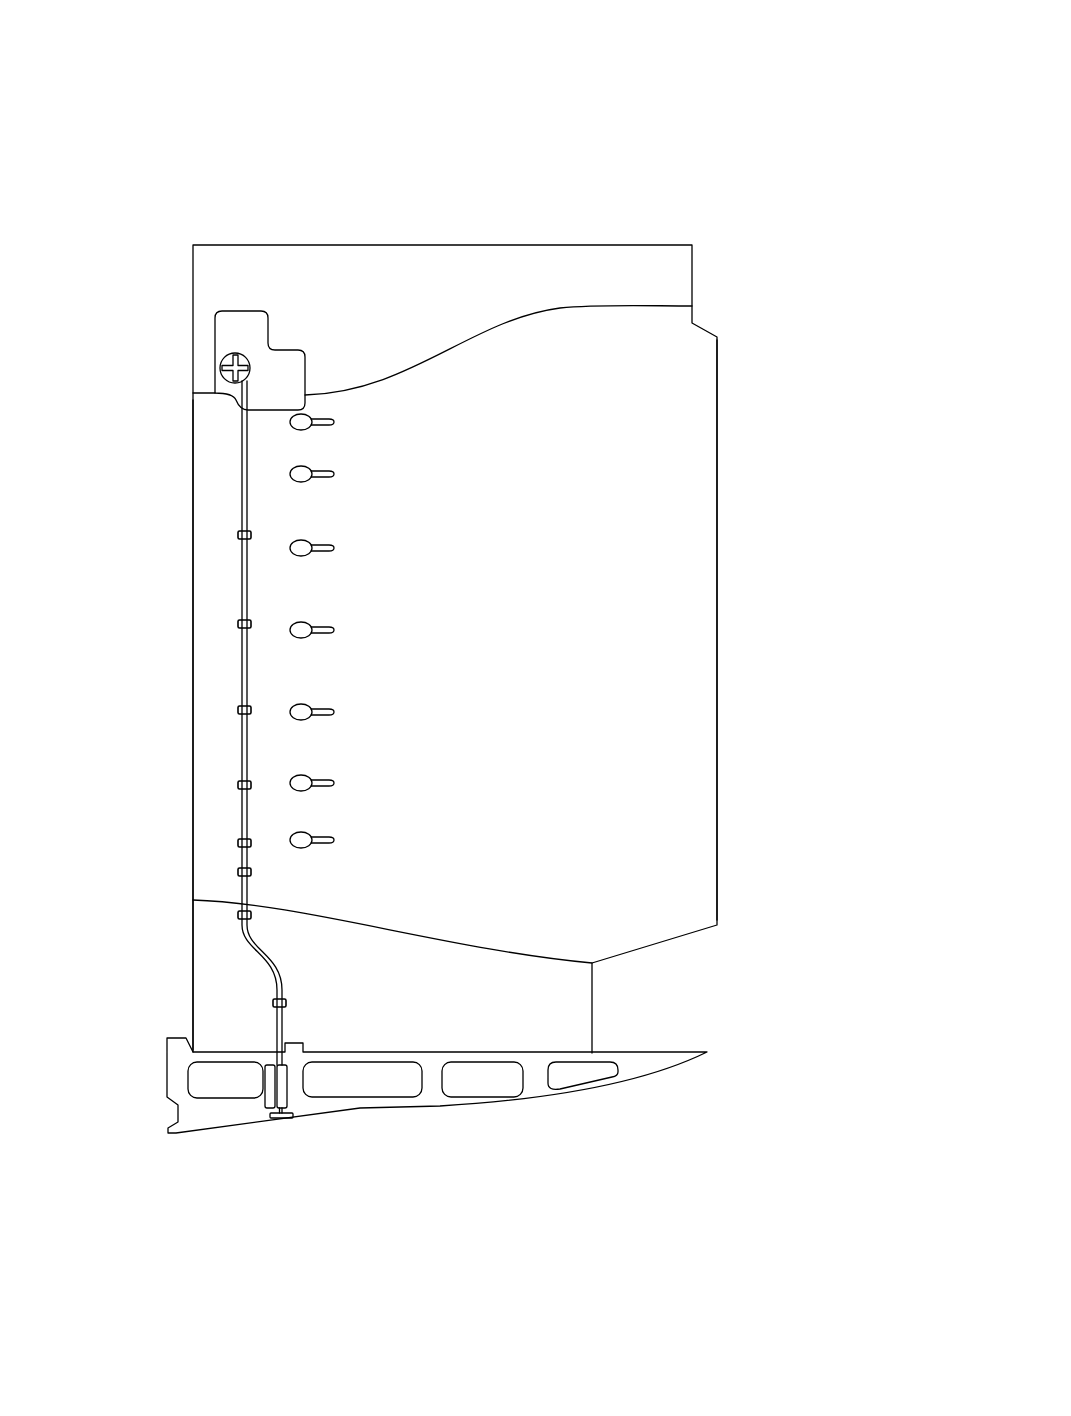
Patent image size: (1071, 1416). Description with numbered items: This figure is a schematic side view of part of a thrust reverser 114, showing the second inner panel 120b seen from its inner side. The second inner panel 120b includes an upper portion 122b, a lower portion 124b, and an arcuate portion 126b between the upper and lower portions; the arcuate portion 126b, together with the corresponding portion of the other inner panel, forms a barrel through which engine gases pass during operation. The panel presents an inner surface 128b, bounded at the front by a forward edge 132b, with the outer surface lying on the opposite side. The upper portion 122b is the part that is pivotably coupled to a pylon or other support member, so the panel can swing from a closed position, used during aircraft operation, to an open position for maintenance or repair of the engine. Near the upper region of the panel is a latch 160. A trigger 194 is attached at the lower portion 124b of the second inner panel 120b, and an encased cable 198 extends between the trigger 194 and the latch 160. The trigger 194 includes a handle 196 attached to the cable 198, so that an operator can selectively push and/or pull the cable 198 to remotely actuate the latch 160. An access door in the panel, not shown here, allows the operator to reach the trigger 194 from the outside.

The thrust reverser 114 is at (662, 103).
The second inner panel 120b is at (676, 222).
The upper portion 122b is at (665, 280).
The lower portion 124b is at (550, 1013).
The arcuate portion 126b is at (718, 652).
The inner surface 128b is at (648, 795).
The forward edge 132b is at (193, 727).
The latch 160 is at (168, 387).
The trigger 194 is at (288, 1074).
The handle 196 is at (277, 1118).
The encased cable 198 is at (243, 818).